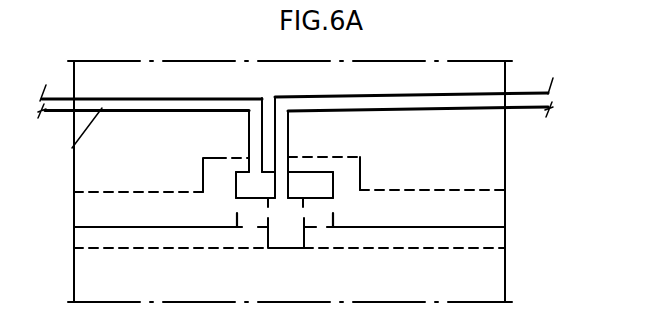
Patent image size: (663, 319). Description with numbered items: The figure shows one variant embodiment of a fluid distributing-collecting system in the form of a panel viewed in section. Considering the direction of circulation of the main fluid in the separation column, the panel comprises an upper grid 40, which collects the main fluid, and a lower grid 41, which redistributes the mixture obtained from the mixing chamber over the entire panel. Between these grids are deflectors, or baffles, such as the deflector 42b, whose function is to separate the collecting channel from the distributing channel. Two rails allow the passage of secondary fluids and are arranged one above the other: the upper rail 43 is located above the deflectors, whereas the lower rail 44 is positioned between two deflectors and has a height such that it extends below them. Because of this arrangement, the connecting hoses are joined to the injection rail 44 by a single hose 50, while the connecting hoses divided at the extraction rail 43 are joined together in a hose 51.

The hose 50 is at (72, 148).
The hose 51 is at (504, 112).
The upper rail 43 is at (310, 181).
The upper grid 40 is at (410, 188).
The deflector 42b is at (108, 220).
The lower rail 44 is at (288, 234).
The lower grid 41 is at (413, 249).